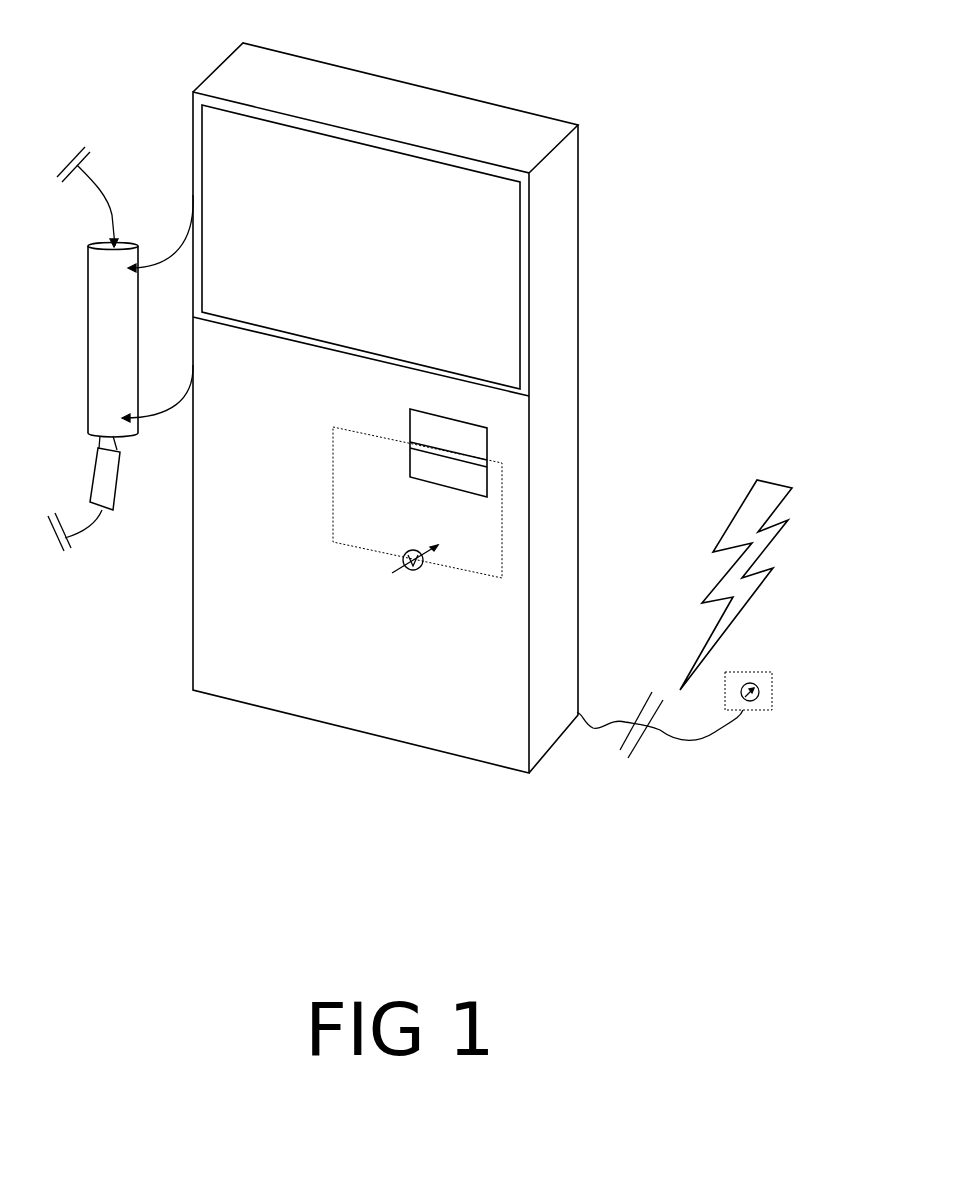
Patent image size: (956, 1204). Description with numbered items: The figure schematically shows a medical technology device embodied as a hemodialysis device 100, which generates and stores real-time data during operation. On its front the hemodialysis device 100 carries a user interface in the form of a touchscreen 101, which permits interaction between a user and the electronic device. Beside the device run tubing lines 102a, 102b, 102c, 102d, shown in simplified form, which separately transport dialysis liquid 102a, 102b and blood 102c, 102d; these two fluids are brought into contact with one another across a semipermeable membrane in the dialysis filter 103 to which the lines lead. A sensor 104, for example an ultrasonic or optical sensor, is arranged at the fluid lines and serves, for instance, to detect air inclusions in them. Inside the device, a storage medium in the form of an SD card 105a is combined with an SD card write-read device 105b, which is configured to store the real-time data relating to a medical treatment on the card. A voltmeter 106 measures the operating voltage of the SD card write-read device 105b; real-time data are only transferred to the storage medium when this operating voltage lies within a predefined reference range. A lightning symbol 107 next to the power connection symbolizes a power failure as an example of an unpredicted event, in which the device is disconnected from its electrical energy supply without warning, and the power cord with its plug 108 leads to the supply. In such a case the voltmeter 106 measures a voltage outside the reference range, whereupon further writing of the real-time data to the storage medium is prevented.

The hemodialysis device 100 is at (247, 718).
The touchscreen 101 is at (498, 255).
The tubing line 102a is at (156, 257).
The tubing line 102b is at (175, 407).
The tubing line 102c is at (98, 183).
The tubing line 102d is at (82, 538).
The dialysis filter 103 is at (83, 310).
The ultrasonic or optical sensor 104 is at (122, 502).
The SD card 105a is at (467, 455).
The SD card write-read device 105b is at (438, 428).
The voltmeter 106 is at (432, 580).
The lightning symbol 107 is at (775, 475).
The power outlet 108 is at (757, 713).